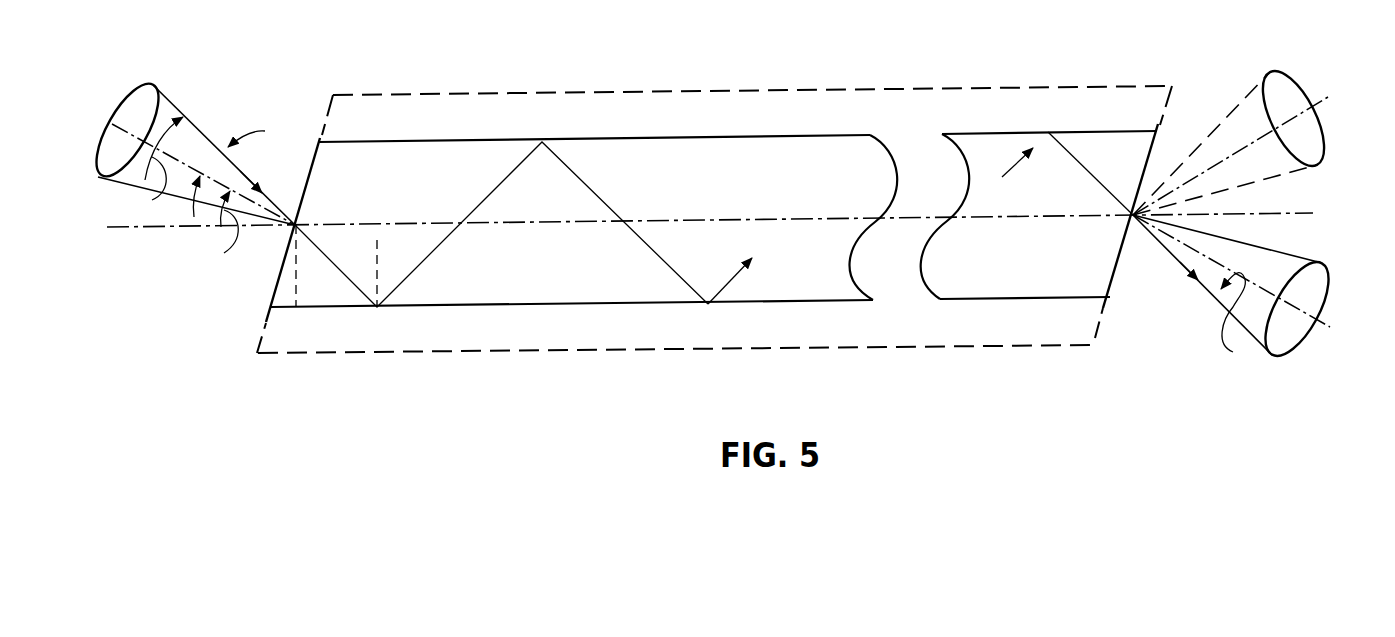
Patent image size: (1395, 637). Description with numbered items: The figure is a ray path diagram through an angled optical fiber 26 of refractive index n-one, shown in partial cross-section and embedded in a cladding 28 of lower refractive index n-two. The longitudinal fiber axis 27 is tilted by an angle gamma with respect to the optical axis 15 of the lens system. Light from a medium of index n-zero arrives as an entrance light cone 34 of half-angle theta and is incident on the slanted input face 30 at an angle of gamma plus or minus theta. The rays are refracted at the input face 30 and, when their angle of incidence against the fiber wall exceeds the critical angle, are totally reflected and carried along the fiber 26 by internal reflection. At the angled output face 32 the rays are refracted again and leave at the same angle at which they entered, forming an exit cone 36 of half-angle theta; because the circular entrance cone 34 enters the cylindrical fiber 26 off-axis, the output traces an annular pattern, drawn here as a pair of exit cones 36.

The optical axis 15 is at (118, 123).
The optical fiber 26 is at (868, 148).
The longitudinal axis 27 is at (140, 233).
The cladding 28 is at (358, 113).
The input face 30 is at (310, 155).
The output face 32 is at (1113, 287).
The entrance light cone 34 is at (142, 110).
The exit cone 36 is at (1313, 288).